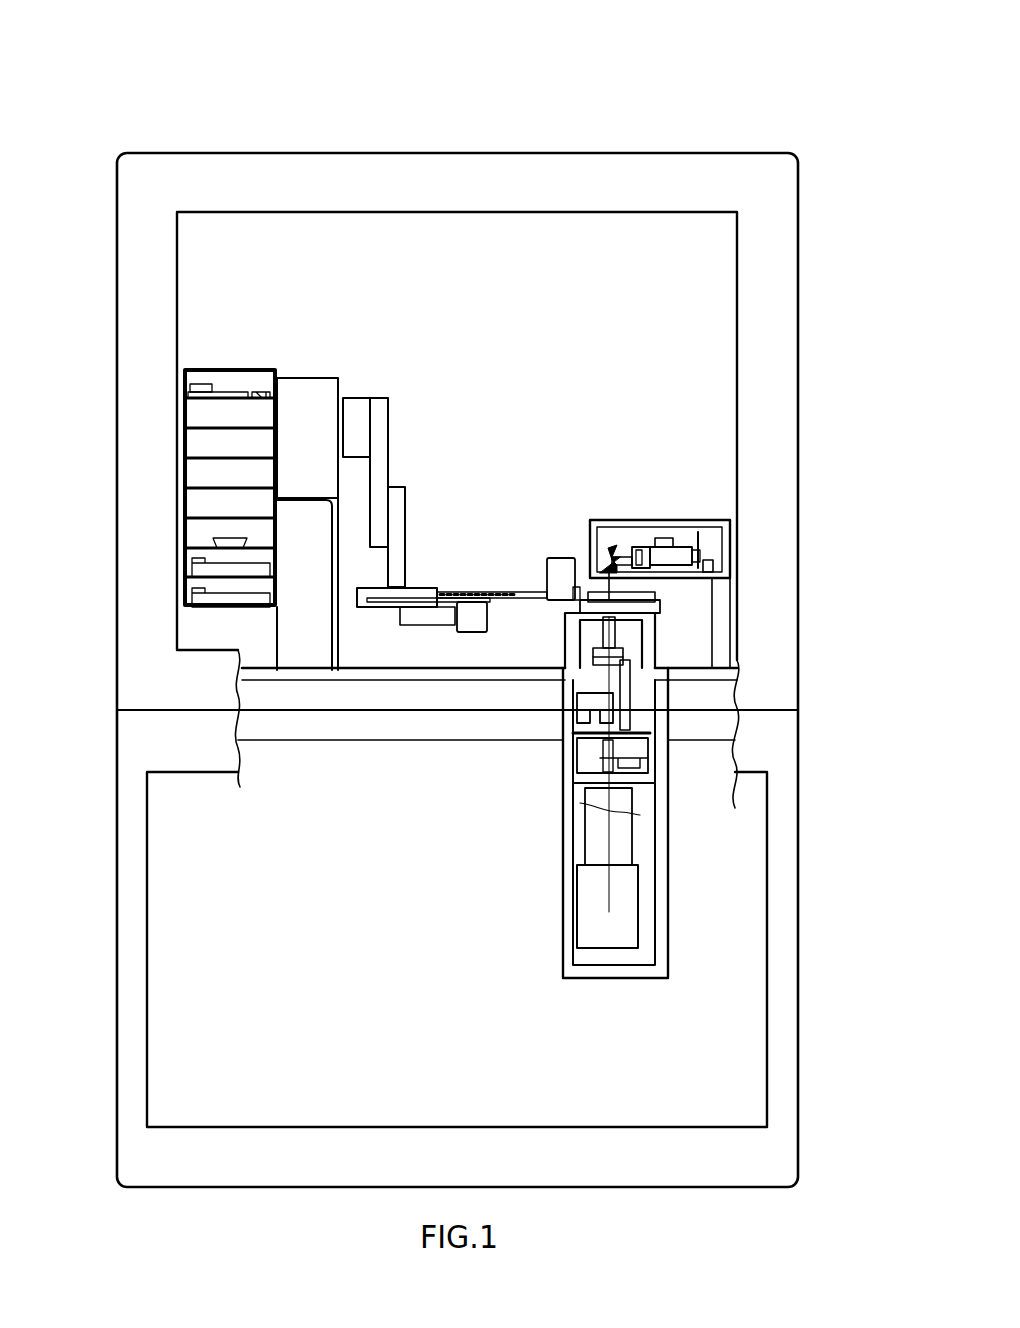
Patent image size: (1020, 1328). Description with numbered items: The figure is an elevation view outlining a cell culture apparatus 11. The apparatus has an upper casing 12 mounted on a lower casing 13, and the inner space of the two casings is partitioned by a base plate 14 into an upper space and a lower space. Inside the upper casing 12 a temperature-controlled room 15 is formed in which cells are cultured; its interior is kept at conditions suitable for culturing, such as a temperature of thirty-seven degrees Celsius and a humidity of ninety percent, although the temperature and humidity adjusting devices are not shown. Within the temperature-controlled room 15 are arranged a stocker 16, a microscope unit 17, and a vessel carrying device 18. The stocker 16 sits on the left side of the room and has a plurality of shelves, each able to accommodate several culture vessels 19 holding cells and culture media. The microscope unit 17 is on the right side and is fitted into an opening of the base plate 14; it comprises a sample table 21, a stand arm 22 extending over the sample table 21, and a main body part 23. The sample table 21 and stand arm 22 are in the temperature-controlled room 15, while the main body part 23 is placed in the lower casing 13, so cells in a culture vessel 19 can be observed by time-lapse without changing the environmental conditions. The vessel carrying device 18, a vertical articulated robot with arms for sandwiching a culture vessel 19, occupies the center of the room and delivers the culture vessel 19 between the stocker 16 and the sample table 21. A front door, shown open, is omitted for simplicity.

The cell culture apparatus 11 is at (503, 120).
The upper casing 12 is at (660, 153).
The lower casing 13 is at (798, 925).
The base plate 14 is at (370, 676).
The temperature-controlled room 15 is at (680, 306).
The stocker 16 is at (205, 367).
The microscope unit 17 is at (655, 709).
The vessel carrying device 18 is at (415, 590).
The culture vessel 19 is at (210, 541).
The sample table 21 is at (663, 613).
The stand arm 22 is at (668, 520).
The main body part 23 is at (563, 835).